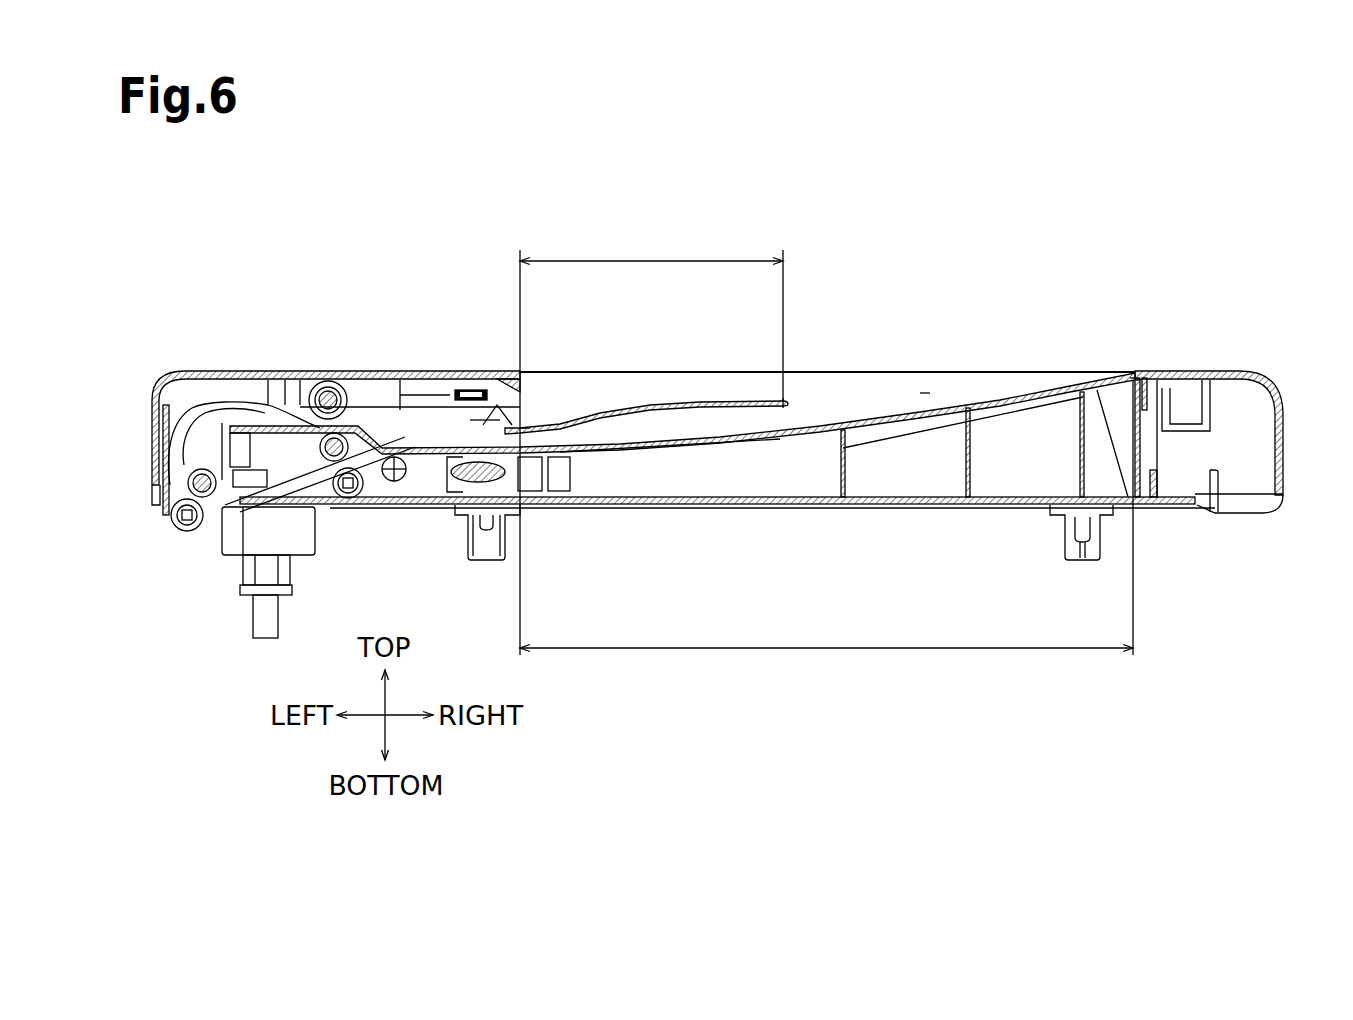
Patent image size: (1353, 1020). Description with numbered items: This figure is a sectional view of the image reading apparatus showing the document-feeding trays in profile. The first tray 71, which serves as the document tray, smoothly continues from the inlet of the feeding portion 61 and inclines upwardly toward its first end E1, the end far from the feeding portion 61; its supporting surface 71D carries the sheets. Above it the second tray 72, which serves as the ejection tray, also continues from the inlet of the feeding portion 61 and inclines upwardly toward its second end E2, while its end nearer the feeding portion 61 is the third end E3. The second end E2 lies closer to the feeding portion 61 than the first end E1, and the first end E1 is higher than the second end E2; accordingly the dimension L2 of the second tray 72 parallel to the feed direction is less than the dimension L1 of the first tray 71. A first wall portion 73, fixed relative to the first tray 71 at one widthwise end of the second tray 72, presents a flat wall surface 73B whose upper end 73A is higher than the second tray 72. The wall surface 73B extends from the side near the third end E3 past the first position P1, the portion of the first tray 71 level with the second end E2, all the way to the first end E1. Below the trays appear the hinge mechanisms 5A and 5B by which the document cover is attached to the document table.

The feeding portion 61 is at (393, 445).
The first tray 71 is at (835, 420).
The supporting surface 71D is at (673, 434).
The second tray 72 is at (682, 400).
The first wall portion 73 is at (963, 400).
The upper end 73A is at (616, 371).
The wall surface 73B is at (884, 378).
The hinge mechanism 5A is at (1065, 537).
The hinge mechanism 5B is at (463, 538).
The first end E1 is at (1136, 377).
The second end E2 is at (787, 400).
The third end E3 is at (526, 422).
The first position P1 is at (926, 393).
The dimension of first tray L1 is at (826, 517).
The dimension of second tray L2 is at (651, 444).